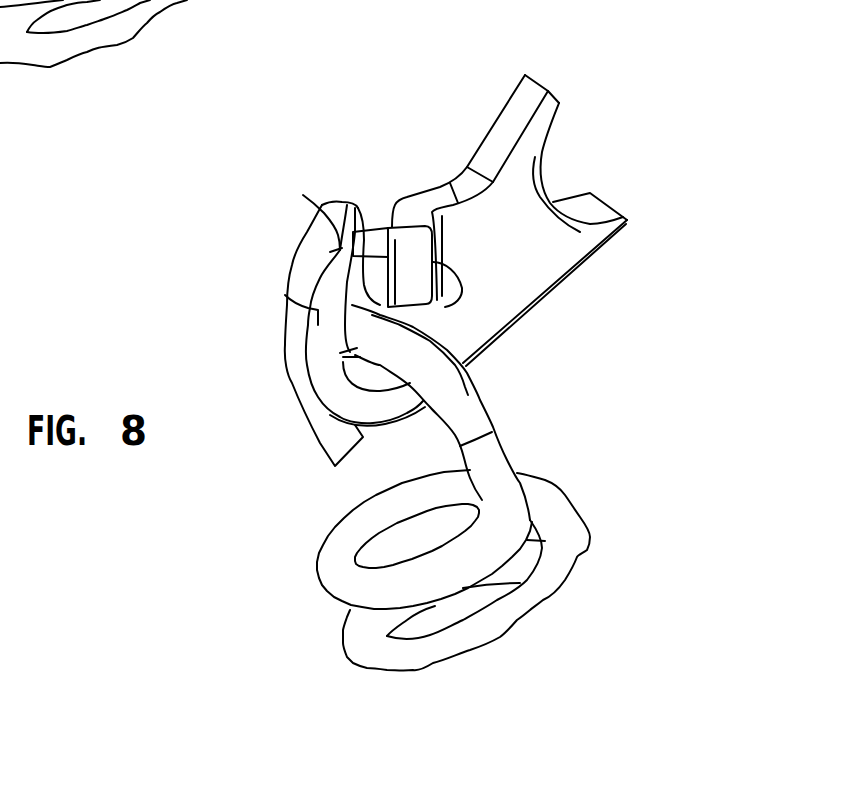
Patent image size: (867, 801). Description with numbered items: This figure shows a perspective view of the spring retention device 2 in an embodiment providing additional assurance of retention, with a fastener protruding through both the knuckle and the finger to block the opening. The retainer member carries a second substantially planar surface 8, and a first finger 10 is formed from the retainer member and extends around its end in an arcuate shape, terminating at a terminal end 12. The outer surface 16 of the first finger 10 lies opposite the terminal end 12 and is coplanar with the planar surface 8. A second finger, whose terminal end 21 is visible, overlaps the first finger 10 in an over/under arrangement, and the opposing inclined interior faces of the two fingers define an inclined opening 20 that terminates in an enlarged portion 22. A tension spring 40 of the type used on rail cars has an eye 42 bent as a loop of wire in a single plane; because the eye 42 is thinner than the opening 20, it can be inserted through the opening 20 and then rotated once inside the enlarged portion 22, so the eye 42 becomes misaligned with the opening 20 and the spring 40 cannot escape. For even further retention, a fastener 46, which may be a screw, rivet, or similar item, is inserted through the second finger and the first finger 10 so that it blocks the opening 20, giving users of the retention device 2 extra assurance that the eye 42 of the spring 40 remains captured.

The spring retention device 2 is at (432, 125).
The second substantially planar surface 8 is at (530, 237).
The first finger 10 is at (307, 268).
The terminal end 12 is at (337, 202).
The outer surface 16 is at (330, 342).
The opening 20 is at (375, 216).
The terminal end 21 is at (412, 248).
The enlarged portion 22 is at (352, 378).
The tension spring 40 is at (570, 523).
The eye 42 is at (482, 413).
The fastener 46 is at (303, 195).